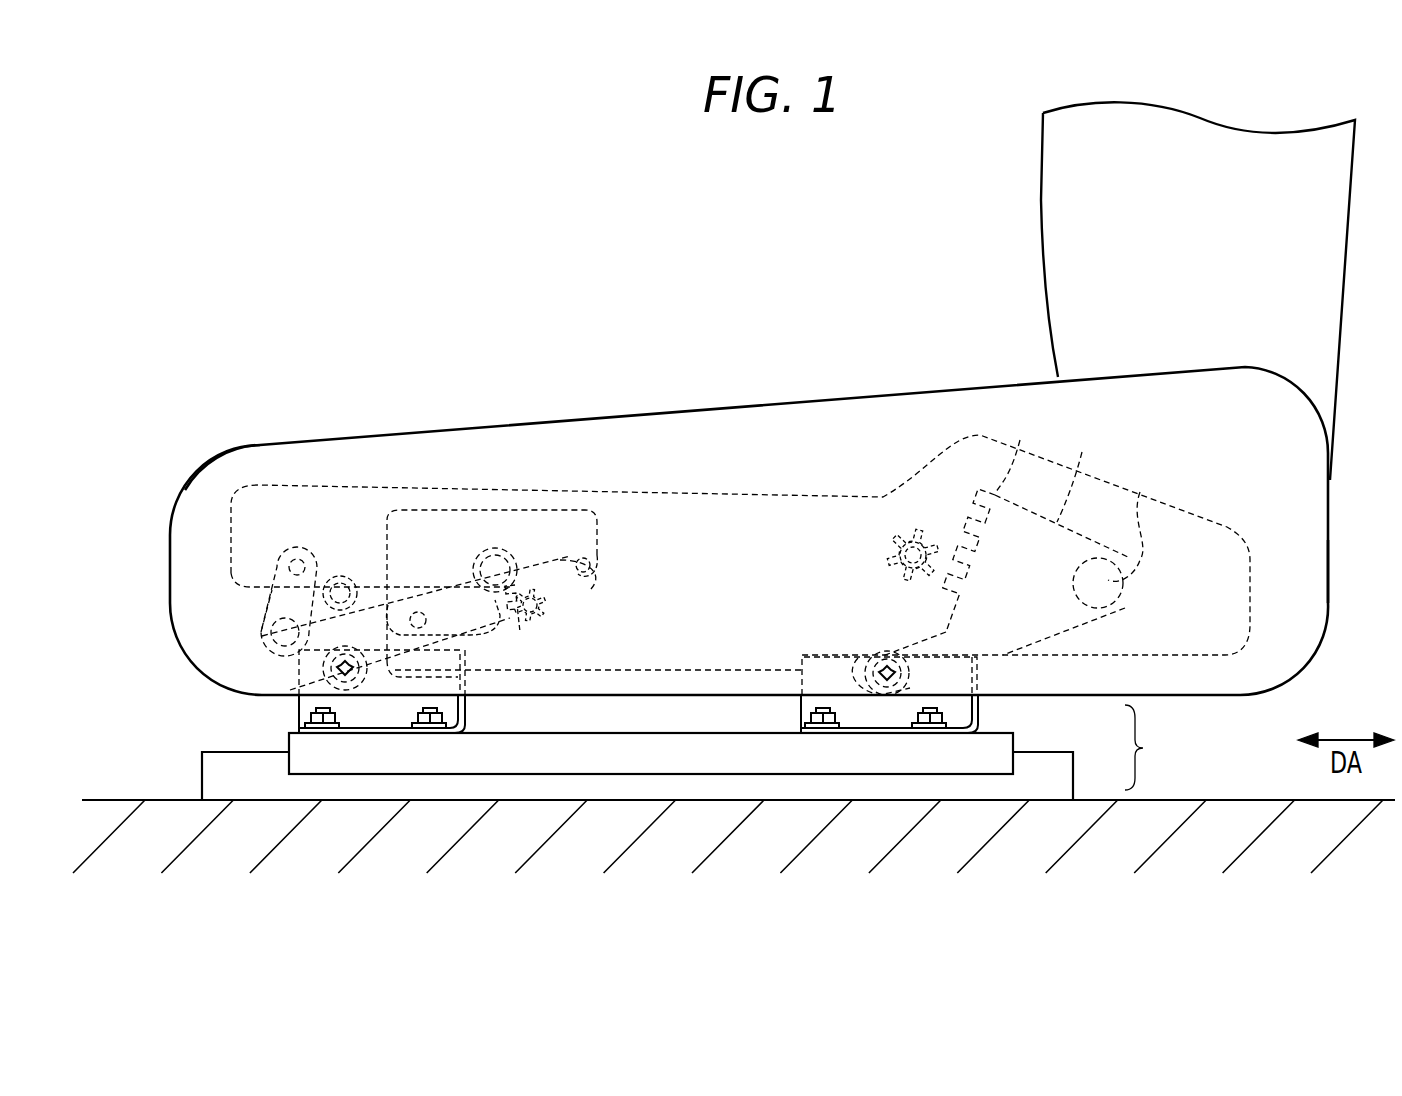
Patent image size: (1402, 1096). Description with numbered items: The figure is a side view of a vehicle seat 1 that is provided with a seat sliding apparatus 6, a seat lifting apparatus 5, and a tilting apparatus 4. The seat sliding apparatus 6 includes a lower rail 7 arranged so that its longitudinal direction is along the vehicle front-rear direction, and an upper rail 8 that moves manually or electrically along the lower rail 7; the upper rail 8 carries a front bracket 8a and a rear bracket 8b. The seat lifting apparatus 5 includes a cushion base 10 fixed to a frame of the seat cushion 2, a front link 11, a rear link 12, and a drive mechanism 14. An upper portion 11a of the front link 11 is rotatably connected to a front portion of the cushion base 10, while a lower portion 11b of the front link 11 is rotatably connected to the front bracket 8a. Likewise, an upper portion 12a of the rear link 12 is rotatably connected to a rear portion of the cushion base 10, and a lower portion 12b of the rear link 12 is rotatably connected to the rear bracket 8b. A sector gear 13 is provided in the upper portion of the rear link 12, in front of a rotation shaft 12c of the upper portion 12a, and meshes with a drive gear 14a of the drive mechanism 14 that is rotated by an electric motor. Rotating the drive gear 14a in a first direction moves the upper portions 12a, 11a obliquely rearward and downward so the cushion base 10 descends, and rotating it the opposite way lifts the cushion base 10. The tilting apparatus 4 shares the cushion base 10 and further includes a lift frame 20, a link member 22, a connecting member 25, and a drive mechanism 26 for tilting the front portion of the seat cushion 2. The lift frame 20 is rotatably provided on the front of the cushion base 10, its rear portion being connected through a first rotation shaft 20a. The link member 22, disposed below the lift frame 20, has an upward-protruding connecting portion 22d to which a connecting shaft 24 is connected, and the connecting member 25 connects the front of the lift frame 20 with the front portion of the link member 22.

The vehicle seat 1 is at (990, 175).
The seat cushion 2 is at (883, 393).
The tilting apparatus 4 is at (238, 475).
The seat lifting apparatus 5 is at (1305, 528).
The seat sliding apparatus 6 is at (1145, 747).
The lower rail 7 is at (1075, 777).
The upper rail 8 is at (1015, 744).
The front bracket 8a is at (297, 720).
The rear bracket 8b is at (980, 710).
The cushion base 10 is at (770, 497).
The front link 11 is at (525, 632).
The upper portion of the front link 11a is at (578, 592).
The lower portion of the front link 11b is at (320, 680).
The rear link 12 is at (1079, 472).
The upper portion of the rear link 12a is at (1140, 492).
The lower portion of the rear link 12b is at (858, 660).
The rotation shaft 12c is at (1130, 611).
The sector gear 13 is at (1038, 464).
The drive mechanism 14 is at (826, 540).
The drive gear 14a is at (895, 574).
The lift frame 20 is at (432, 495).
The first rotation shaft 20a is at (592, 562).
The link member 22 is at (515, 660).
The connecting portion 22d is at (350, 576).
The connecting shaft 24 is at (322, 567).
The connecting member 25 is at (268, 592).
The drive mechanism 26 is at (605, 633).